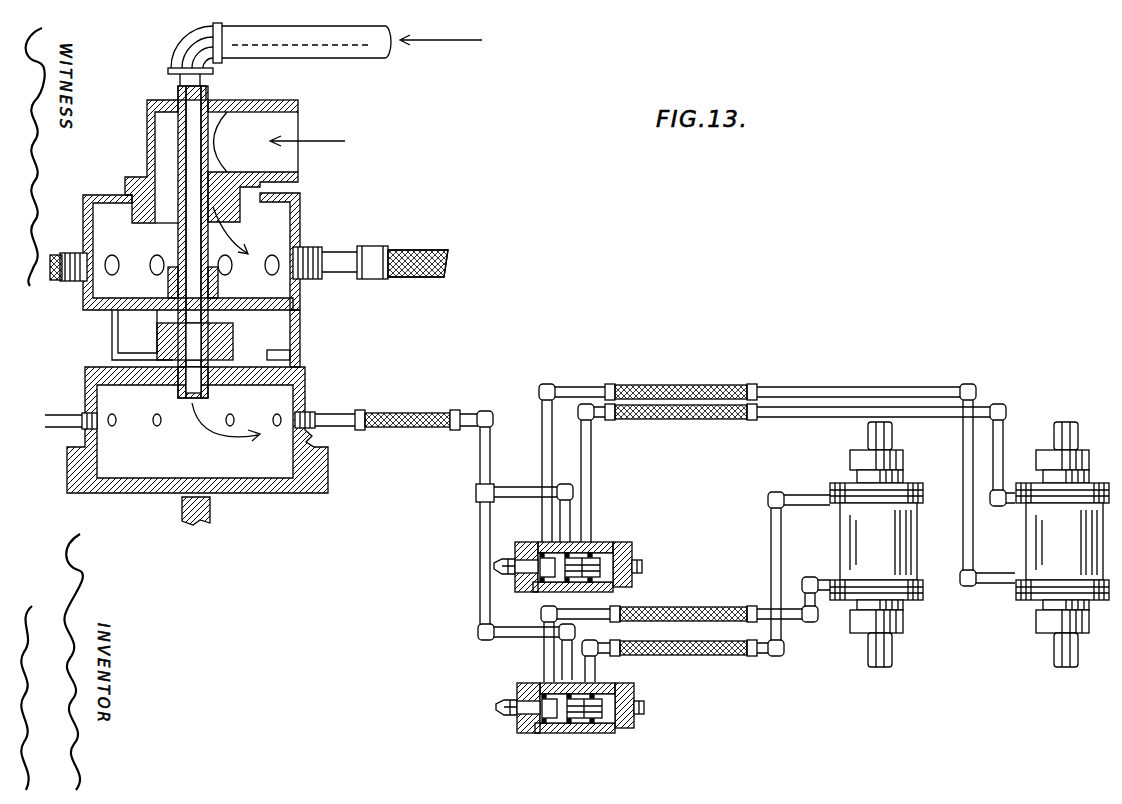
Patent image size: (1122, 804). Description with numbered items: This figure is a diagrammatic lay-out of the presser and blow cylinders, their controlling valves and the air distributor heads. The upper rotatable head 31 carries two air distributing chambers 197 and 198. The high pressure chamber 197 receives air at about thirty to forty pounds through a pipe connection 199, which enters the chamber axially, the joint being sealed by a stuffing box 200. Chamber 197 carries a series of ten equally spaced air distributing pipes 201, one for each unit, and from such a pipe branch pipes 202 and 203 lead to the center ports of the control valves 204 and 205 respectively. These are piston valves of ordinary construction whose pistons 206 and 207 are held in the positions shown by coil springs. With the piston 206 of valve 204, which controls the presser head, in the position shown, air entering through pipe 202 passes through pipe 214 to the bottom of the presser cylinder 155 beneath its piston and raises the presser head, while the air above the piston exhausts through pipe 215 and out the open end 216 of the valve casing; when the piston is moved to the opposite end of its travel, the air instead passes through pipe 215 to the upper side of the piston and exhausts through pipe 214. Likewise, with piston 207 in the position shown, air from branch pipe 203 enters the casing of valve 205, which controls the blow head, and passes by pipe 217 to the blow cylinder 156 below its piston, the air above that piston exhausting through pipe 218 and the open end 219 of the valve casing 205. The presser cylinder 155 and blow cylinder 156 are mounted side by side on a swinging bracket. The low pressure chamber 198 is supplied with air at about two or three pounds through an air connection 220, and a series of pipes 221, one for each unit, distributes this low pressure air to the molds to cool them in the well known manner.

The pipe connection 199 is at (372, 52).
The air connection 220 is at (293, 123).
The air distributing chamber 198 is at (273, 212).
The upper rotatable head 31 is at (301, 220).
The pipes 221 is at (430, 241).
The stuffing box 200 is at (232, 345).
The air distributing pipes 201 is at (62, 413).
The air distributing chamber 197 is at (143, 462).
The branch pipe 202 is at (521, 490).
The branch pipe 203 is at (479, 612).
The control valve 204 is at (607, 543).
The piston 206 is at (515, 582).
The open end 216 is at (642, 566).
The control valve 205 is at (597, 735).
The piston 207 is at (523, 730).
The open end 219 is at (644, 707).
The pipe 214 is at (808, 387).
The pipe 215 is at (790, 416).
The pipe 217 is at (733, 608).
The pipe 218 is at (702, 651).
The blow cylinder 156 is at (840, 543).
The presser cylinder 155 is at (1028, 543).